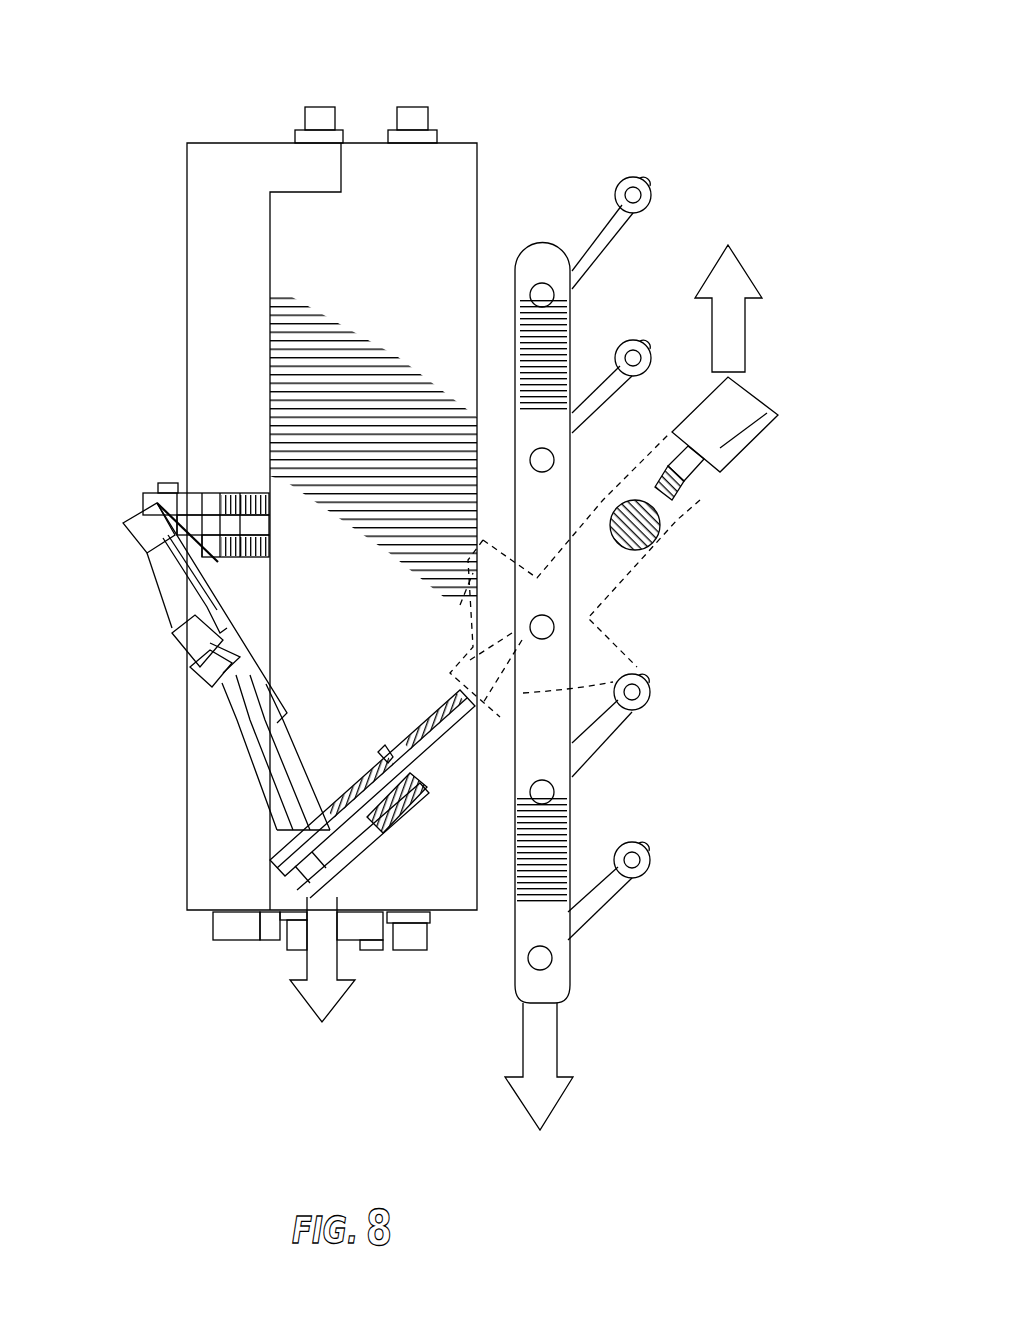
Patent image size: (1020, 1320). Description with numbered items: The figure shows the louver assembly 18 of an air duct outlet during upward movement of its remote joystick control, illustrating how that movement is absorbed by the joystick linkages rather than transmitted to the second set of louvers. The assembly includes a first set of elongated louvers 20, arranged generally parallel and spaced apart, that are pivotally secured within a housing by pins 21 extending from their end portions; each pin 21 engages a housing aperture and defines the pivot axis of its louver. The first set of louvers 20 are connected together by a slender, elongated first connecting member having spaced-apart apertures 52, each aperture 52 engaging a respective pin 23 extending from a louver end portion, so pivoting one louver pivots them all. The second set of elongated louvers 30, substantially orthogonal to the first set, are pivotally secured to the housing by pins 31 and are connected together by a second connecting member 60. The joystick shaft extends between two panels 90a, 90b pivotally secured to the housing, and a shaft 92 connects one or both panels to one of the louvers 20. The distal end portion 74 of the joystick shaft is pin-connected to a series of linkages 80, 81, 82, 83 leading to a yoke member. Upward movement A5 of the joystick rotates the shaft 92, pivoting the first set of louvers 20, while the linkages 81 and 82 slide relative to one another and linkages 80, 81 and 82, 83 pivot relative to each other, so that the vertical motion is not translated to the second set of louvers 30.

The louver assembly 18 is at (850, 194).
The first set of elongated louvers 20 is at (529, 603).
The pins 21 is at (636, 342).
The pins 23 is at (540, 455).
The second set of elongated louvers 30 is at (220, 338).
The pins 31 is at (318, 107).
The apertures 52 is at (571, 450).
The second connecting member 60 is at (357, 960).
The distal end portion 74 is at (425, 715).
The linkage 80 is at (405, 838).
The linkage 81 is at (263, 762).
The linkage 82 is at (173, 620).
The linkage 83 is at (242, 560).
The panel 90a is at (452, 690).
The panel 90b is at (523, 705).
The shaft 92 is at (636, 510).
The upward movement A5 is at (735, 325).